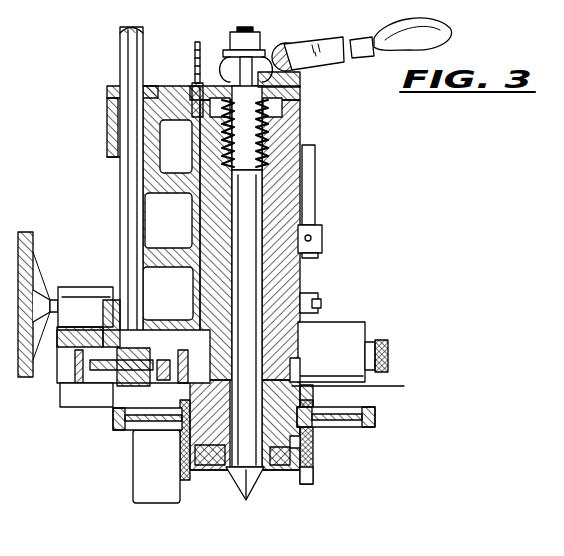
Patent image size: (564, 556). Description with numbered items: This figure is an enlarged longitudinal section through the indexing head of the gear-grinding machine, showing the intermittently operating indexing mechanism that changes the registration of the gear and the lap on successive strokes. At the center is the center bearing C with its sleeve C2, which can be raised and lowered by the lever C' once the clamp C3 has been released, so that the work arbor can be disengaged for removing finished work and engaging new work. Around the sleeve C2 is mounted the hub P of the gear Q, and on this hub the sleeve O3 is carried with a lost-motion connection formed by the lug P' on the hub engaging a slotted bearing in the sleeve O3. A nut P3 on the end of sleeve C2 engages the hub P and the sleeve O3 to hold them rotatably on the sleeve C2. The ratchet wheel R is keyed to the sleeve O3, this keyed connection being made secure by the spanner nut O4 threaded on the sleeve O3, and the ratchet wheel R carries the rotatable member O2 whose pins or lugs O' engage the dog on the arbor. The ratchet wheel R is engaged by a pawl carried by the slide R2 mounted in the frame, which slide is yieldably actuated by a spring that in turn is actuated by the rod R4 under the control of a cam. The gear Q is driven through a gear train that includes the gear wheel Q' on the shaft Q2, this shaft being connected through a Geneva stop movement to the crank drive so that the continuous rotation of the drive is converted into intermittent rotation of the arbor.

The shaft Q2 is at (130, 56).
The center bearing C is at (279, 263).
The lever C' is at (416, 38).
The clamp C3 is at (312, 205).
The sleeve C2 is at (290, 279).
The slide R2 is at (368, 340).
The rod R4 is at (389, 362).
The gear Q is at (309, 364).
The sleeve O3 is at (361, 387).
The hub P is at (326, 399).
The ratchet wheel R is at (378, 418).
The rotatable member O2 is at (306, 442).
The pins or lugs O' is at (234, 466).
The spanner nut O4 is at (200, 470).
The nut P3 is at (283, 470).
The lug P' is at (133, 368).
The gear wheel Q' is at (69, 331).